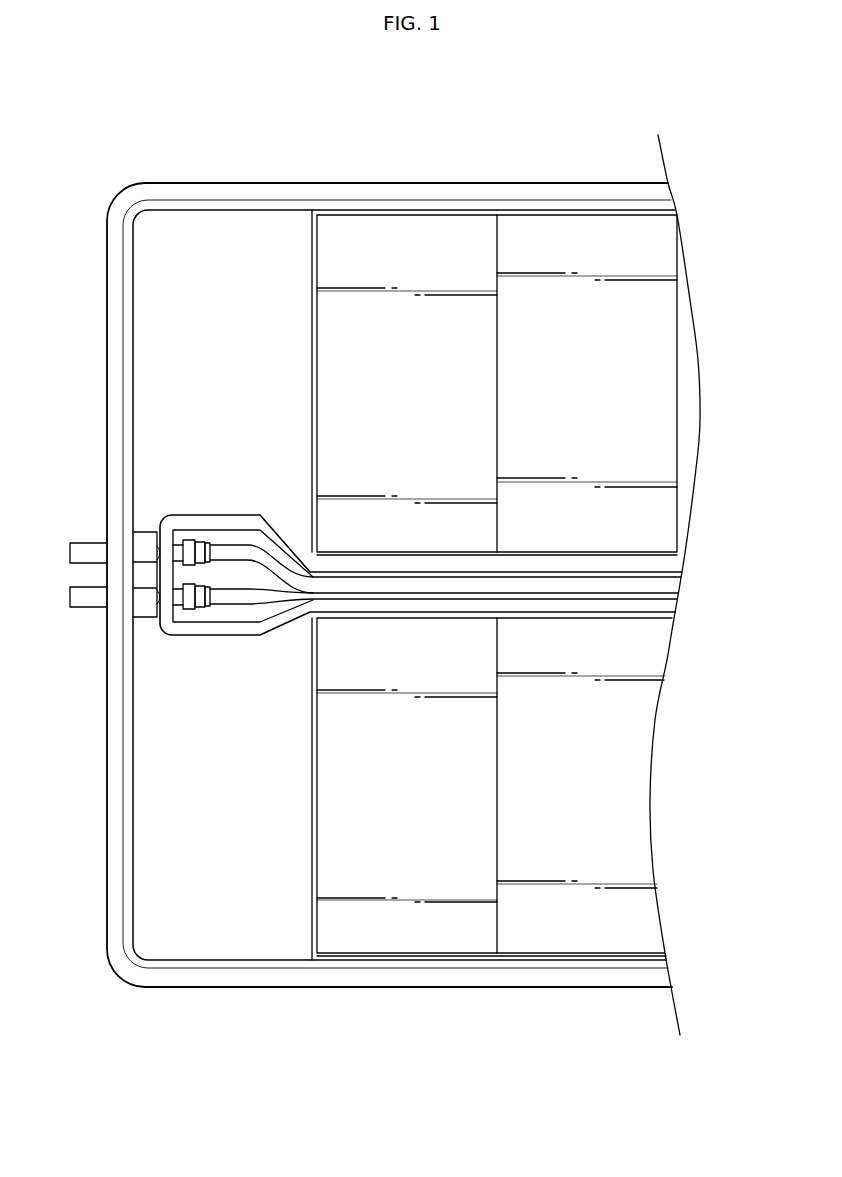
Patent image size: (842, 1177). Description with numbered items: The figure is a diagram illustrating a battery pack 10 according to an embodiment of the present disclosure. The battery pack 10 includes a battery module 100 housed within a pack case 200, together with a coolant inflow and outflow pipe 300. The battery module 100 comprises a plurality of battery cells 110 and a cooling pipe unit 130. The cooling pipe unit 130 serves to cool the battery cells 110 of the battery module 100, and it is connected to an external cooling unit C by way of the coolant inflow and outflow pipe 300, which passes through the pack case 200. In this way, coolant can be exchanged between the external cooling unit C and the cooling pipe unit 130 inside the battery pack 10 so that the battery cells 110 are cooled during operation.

The battery pack 10 is at (164, 128).
The pack case 200 is at (410, 183).
The battery module 100 is at (698, 214).
The battery cell 110 is at (648, 360).
The cooling pipe unit 130 is at (696, 582).
The coolant inflow and outflow pipe 300 is at (95, 626).
The external cooling unit C is at (82, 550).